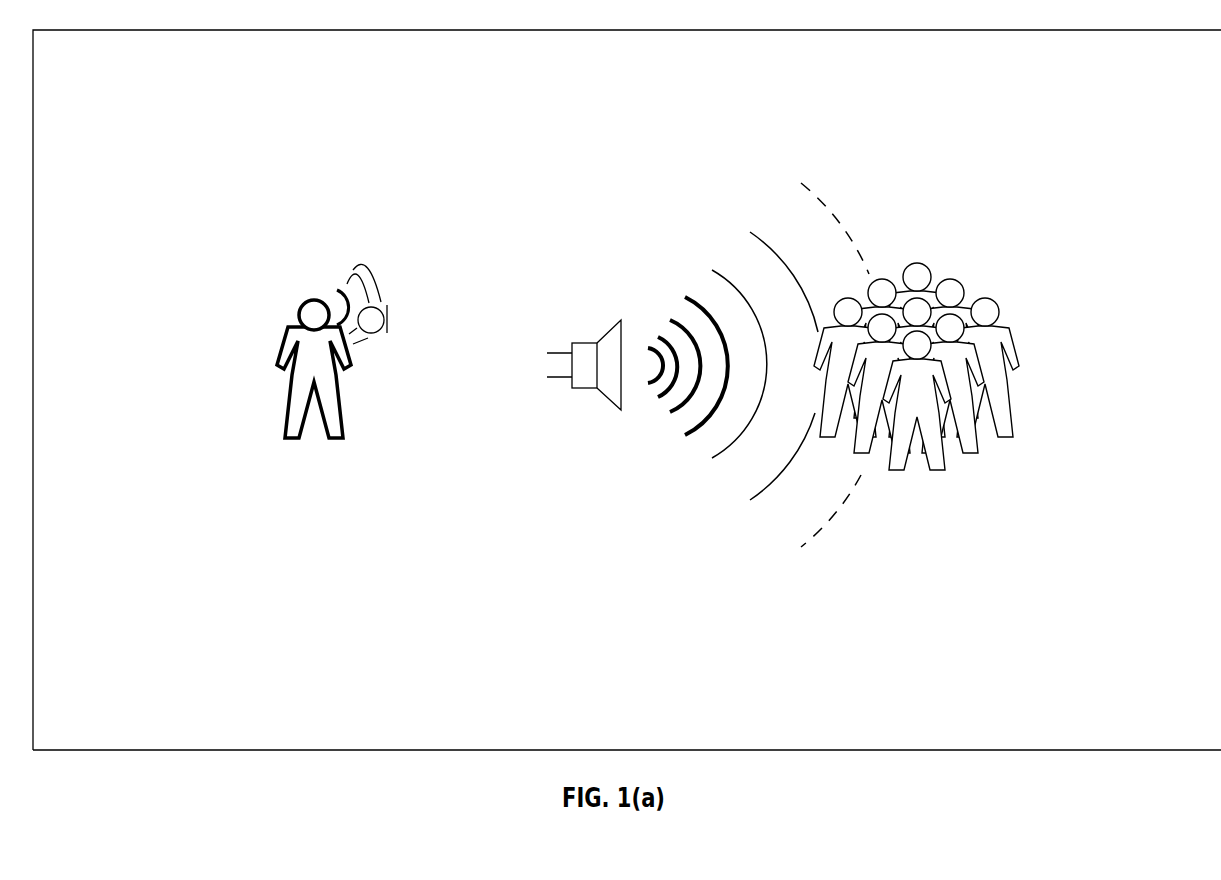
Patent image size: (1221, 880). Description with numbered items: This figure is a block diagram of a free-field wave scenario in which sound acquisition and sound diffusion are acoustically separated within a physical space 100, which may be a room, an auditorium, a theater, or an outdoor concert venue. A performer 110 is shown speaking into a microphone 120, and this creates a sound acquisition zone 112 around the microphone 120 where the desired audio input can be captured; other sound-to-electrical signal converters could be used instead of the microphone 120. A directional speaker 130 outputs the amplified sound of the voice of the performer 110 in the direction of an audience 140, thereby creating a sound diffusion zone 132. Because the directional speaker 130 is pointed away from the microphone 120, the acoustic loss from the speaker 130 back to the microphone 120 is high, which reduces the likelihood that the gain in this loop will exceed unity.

The physical space 100 is at (85, 75).
The performer 110 is at (330, 440).
The sound acquisition zone 112 is at (344, 276).
The microphone 120 is at (388, 332).
The directional speaker 130 is at (587, 398).
The sound diffusion zone 132 is at (693, 271).
The audience 140 is at (920, 468).